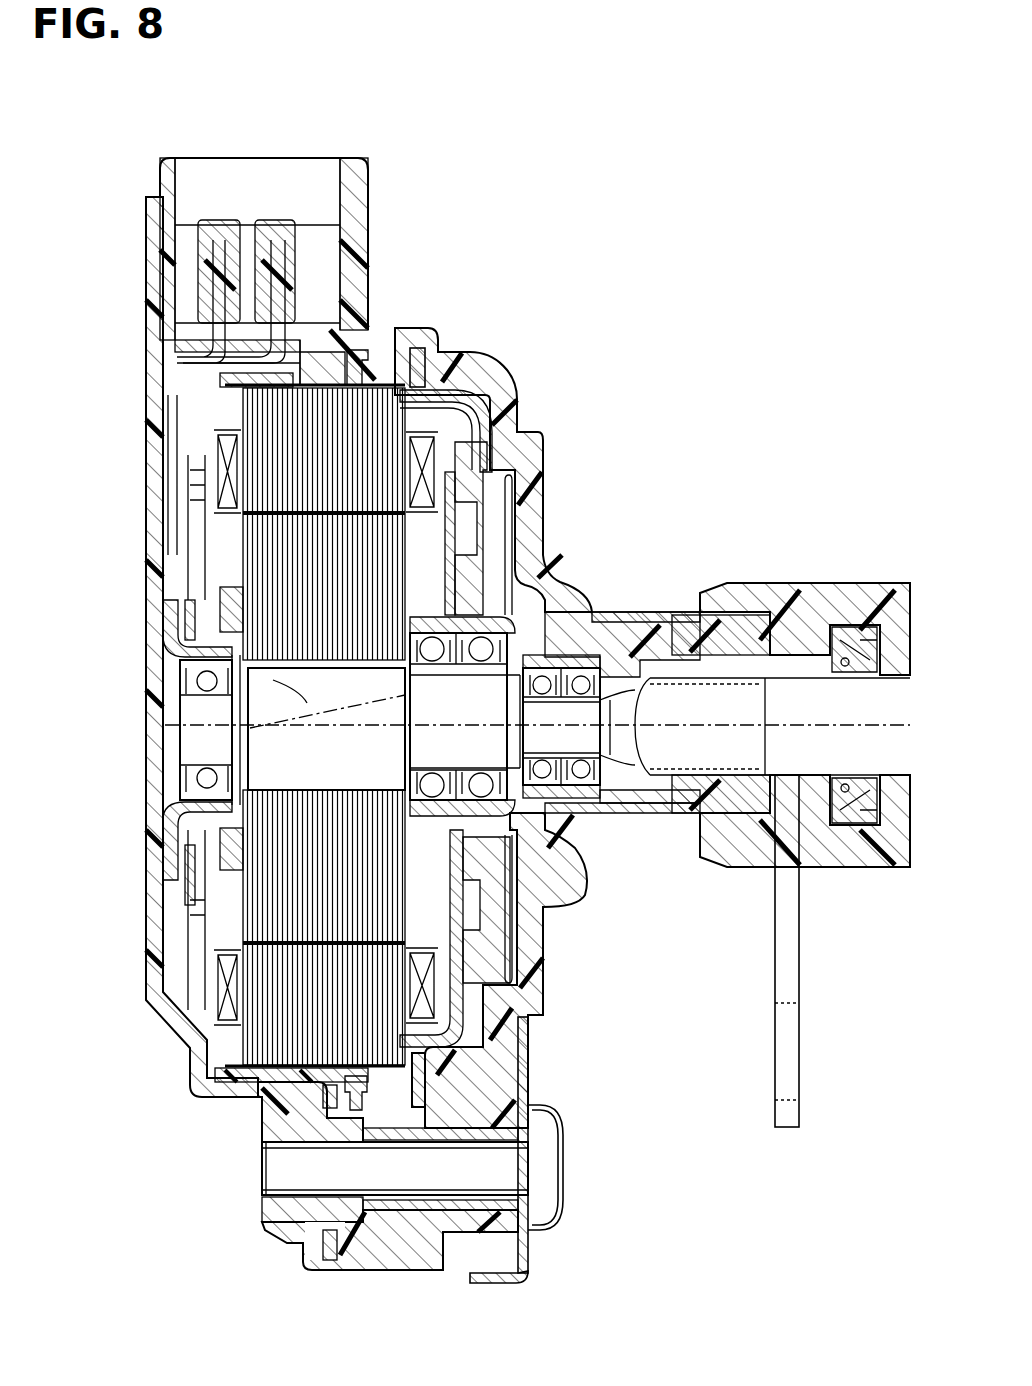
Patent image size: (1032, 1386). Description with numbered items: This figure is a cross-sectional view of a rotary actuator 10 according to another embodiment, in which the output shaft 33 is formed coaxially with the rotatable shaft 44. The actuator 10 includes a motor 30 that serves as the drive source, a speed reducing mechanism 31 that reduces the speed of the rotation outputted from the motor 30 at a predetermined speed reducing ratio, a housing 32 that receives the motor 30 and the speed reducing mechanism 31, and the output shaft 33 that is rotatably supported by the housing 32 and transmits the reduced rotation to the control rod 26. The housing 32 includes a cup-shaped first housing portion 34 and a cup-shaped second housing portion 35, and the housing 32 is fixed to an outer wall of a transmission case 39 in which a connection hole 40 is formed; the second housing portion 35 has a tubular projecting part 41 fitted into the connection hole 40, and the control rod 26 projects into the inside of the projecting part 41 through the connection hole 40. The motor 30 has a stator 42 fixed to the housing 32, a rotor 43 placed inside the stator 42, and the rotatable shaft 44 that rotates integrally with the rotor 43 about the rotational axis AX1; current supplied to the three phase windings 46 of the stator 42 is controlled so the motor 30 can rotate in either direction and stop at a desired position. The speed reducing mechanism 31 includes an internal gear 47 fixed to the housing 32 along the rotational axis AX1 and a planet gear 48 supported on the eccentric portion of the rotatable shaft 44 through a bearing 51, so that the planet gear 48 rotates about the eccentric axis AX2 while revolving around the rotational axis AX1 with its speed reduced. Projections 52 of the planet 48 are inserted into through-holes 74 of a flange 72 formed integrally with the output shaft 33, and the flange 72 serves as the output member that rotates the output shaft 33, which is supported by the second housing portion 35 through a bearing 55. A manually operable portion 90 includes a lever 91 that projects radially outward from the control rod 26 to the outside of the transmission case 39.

The actuator 10 is at (148, 148).
The control rod 26 is at (880, 842).
The motor 30 is at (58, 492).
The speed reducing mechanism 31 is at (440, 884).
The housing 32 is at (485, 268).
The output shaft 33 is at (650, 663).
The first housing portion 34 is at (328, 372).
The second housing portion 35 is at (464, 372).
The transmission case 39 is at (865, 598).
The connection hole 40 is at (804, 635).
The projecting part 41 is at (747, 632).
The stator 42 is at (288, 467).
The rotor 43 is at (278, 563).
The rotatable shaft 44 is at (305, 757).
The three phase windings 46 is at (470, 432).
The internal gear 47 is at (490, 1025).
The planet gear 48 is at (468, 900).
The bearing 51 is at (554, 617).
The projections 52 is at (497, 522).
The bearing 55 is at (633, 813).
The flange 72 is at (511, 960).
The through-holes 74 is at (511, 562).
The manually operable portion 90 is at (805, 1042).
The lever 91 is at (781, 963).
The rotational axis AX1 is at (215, 746).
The eccentric axis AX2 is at (236, 706).